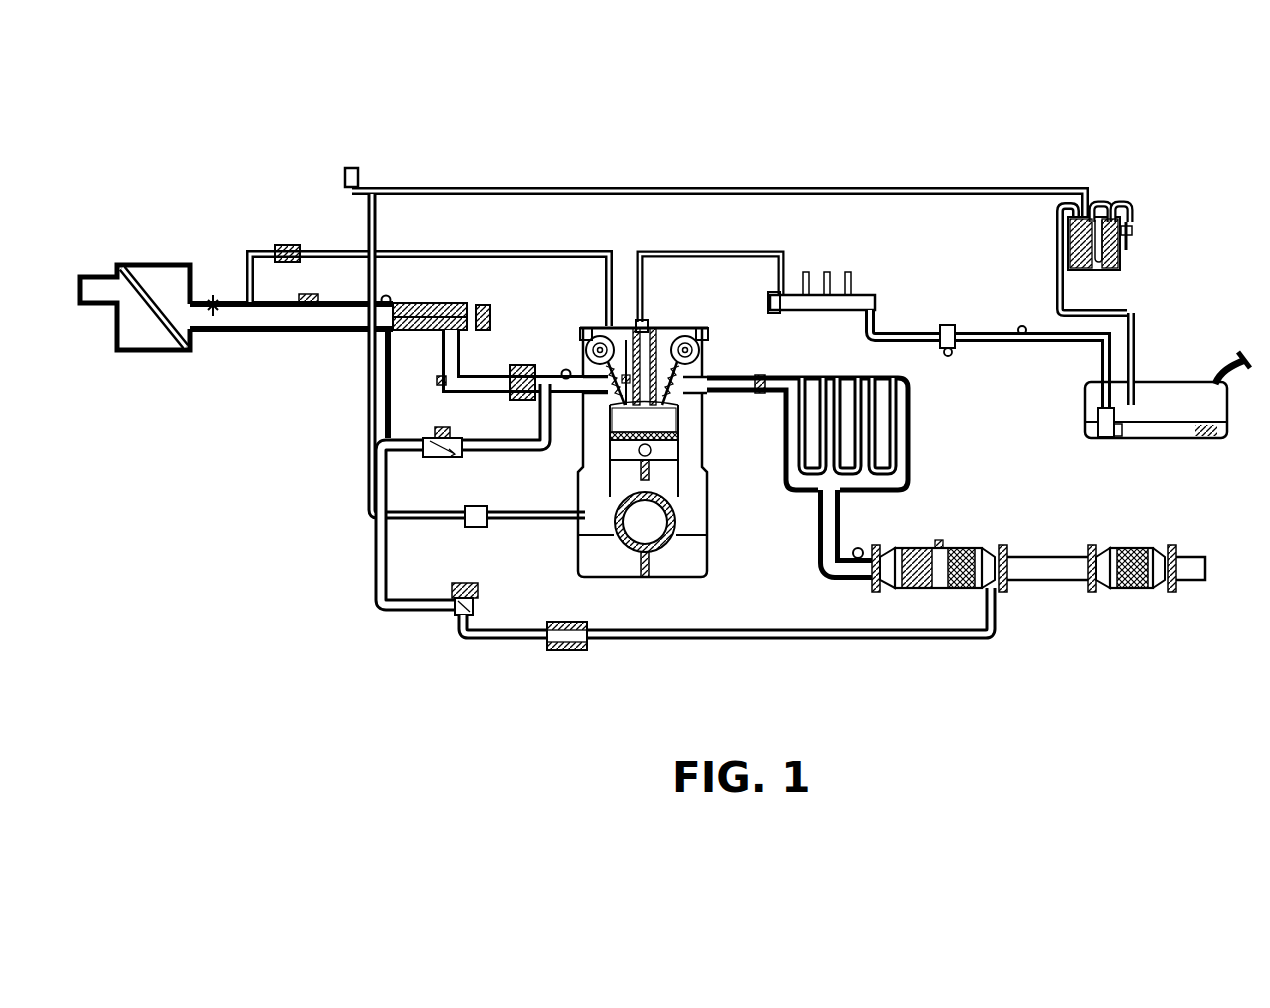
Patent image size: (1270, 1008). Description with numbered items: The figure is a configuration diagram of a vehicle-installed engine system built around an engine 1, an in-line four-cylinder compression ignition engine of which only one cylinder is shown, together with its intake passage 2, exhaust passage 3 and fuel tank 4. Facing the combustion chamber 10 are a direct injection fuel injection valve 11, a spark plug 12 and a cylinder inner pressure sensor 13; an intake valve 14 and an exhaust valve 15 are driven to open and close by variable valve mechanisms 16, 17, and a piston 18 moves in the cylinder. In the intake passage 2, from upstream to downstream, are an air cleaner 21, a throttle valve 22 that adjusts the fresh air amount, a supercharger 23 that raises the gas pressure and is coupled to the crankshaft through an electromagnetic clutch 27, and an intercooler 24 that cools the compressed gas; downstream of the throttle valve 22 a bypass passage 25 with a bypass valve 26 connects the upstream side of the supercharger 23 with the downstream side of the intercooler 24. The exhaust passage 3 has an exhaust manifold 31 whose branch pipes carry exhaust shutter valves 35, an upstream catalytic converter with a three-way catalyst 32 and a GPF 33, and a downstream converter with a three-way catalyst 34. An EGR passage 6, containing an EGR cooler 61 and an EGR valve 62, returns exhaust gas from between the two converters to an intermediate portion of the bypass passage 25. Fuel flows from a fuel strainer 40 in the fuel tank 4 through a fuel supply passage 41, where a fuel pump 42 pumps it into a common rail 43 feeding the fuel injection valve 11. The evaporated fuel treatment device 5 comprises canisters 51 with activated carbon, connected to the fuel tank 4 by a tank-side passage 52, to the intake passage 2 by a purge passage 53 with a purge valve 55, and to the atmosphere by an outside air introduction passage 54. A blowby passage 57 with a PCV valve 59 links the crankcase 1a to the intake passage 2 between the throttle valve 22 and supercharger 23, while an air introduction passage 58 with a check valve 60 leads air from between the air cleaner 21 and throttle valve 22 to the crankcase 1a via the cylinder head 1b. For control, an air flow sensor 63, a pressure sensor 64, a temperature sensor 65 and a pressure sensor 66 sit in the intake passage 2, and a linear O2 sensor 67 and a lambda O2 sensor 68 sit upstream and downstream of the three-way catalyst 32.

The engine 1 is at (713, 571).
The crankcase 1a is at (708, 502).
The cylinder head 1b is at (690, 328).
The intake passage 2 is at (252, 333).
The exhaust passage 3 is at (1046, 557).
The fuel tank 4 is at (1176, 382).
The evaporated fuel treatment device 5 is at (1140, 198).
The EGR passage 6 is at (773, 641).
The combustion chamber 10 is at (700, 433).
The fuel injection valve 11 is at (652, 350).
The spark plug 12 is at (633, 322).
The cylinder inner pressure sensor 13 is at (657, 385).
The intake valve 14 is at (600, 396).
The exhaust valve 15 is at (703, 400).
The variable valve mechanism 16 is at (593, 336).
The variable valve mechanism 17 is at (700, 355).
The piston 18 is at (616, 449).
The air cleaner 21 is at (158, 265).
The throttle valve 22 is at (310, 306).
The supercharger 23 is at (431, 303).
The intercooler 24 is at (521, 365).
The bypass passage 25 is at (401, 453).
The bypass valve 26 is at (453, 458).
The electromagnetic clutch 27 is at (483, 305).
The exhaust manifold 31 is at (911, 433).
The three-way catalyst 32 is at (910, 548).
The GPF 33 is at (960, 548).
The three-way catalyst 34 is at (1135, 548).
The exhaust shutter valve 35 is at (763, 375).
The fuel strainer 40 is at (1106, 438).
The fuel supply passage 41 is at (910, 332).
The fuel pump 42 is at (948, 325).
The common rail 43 is at (864, 294).
The canister 51 is at (1112, 255).
The tank-side passage 52 is at (1136, 330).
The purge passage 53 is at (878, 186).
The outside air introduction passage 54 is at (1133, 224).
The purge valve 55 is at (350, 167).
The blowby passage 57 is at (365, 444).
The air introduction passage 58 is at (453, 250).
The PCV valve 59 is at (477, 527).
The check valve 60 is at (288, 245).
The EGR cooler 61 is at (567, 651).
The EGR valve 62 is at (479, 607).
The air flow sensor 63 is at (213, 294).
The pressure sensor 64 is at (388, 295).
The temperature sensor 65 is at (430, 388).
The pressure sensor 66 is at (565, 370).
The linear O2 sensor 67 is at (858, 548).
The lambda O2 sensor 68 is at (939, 540).